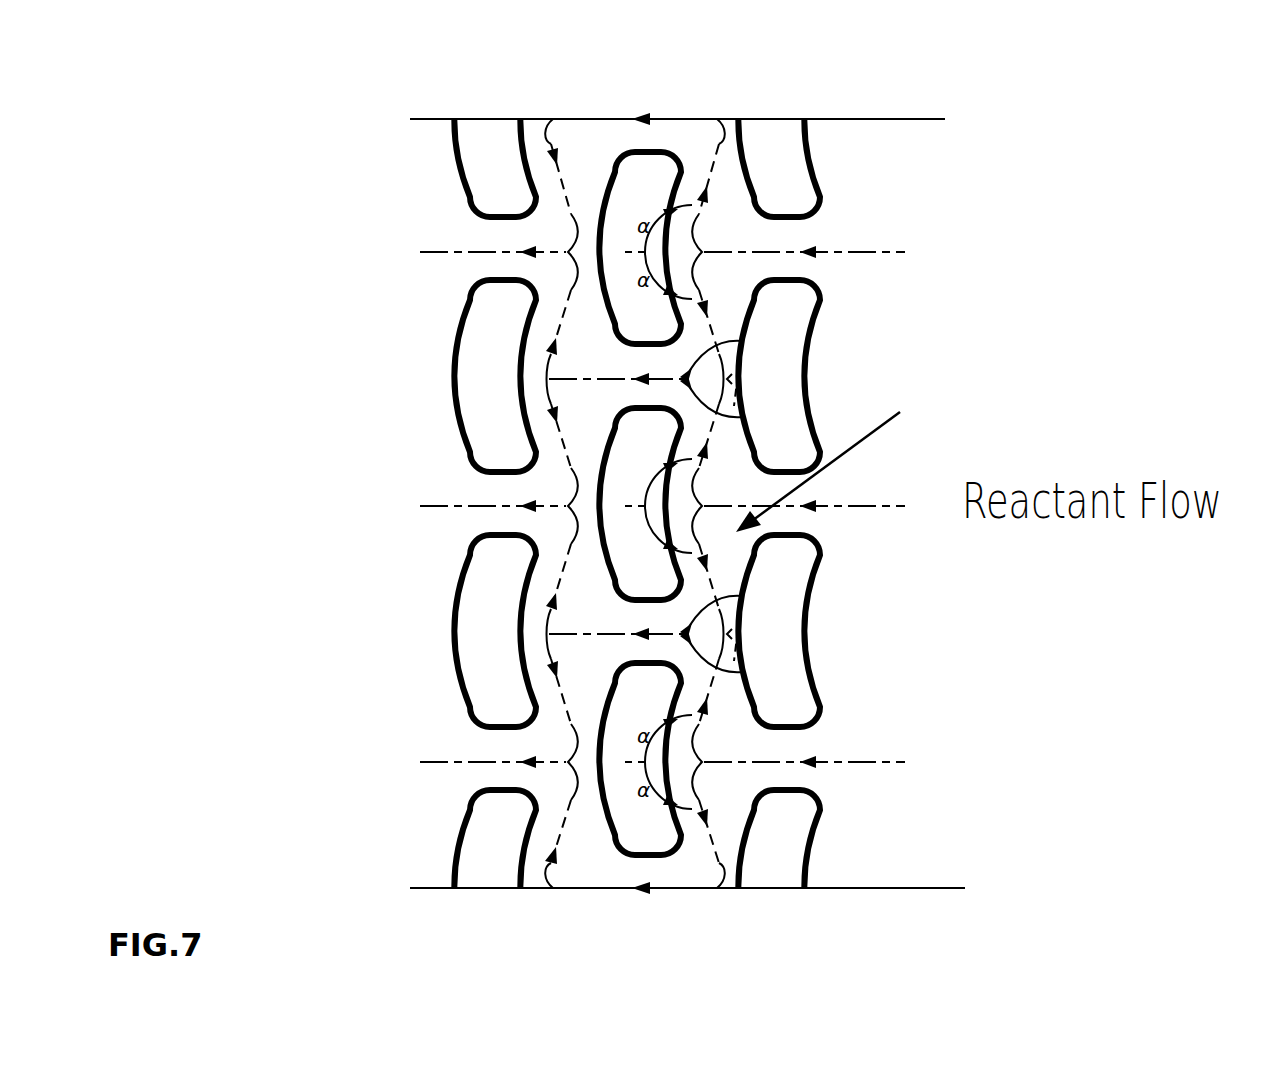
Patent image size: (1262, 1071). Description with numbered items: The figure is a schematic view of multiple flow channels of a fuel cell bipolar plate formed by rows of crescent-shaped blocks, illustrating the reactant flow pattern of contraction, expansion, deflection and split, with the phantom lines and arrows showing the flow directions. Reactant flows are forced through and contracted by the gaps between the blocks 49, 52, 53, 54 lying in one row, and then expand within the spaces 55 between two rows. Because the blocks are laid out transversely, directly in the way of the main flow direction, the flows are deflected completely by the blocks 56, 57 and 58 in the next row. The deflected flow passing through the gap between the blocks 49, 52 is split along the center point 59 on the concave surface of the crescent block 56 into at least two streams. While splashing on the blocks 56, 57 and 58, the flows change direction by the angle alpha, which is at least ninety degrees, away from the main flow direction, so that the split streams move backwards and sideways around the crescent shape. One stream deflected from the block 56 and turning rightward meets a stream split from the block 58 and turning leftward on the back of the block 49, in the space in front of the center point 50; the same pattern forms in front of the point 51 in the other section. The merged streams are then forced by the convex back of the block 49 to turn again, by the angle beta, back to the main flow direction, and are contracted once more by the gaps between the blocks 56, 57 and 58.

The block 49 is at (793, 320).
The center point 50 is at (743, 377).
The point 51 is at (737, 630).
The block 52 is at (797, 703).
The block 53 is at (790, 862).
The block 54 is at (790, 183).
The space 55 is at (768, 500).
The crescent block 56 is at (620, 473).
The block 57 is at (620, 713).
The block 58 is at (627, 217).
The center point 59 is at (668, 503).